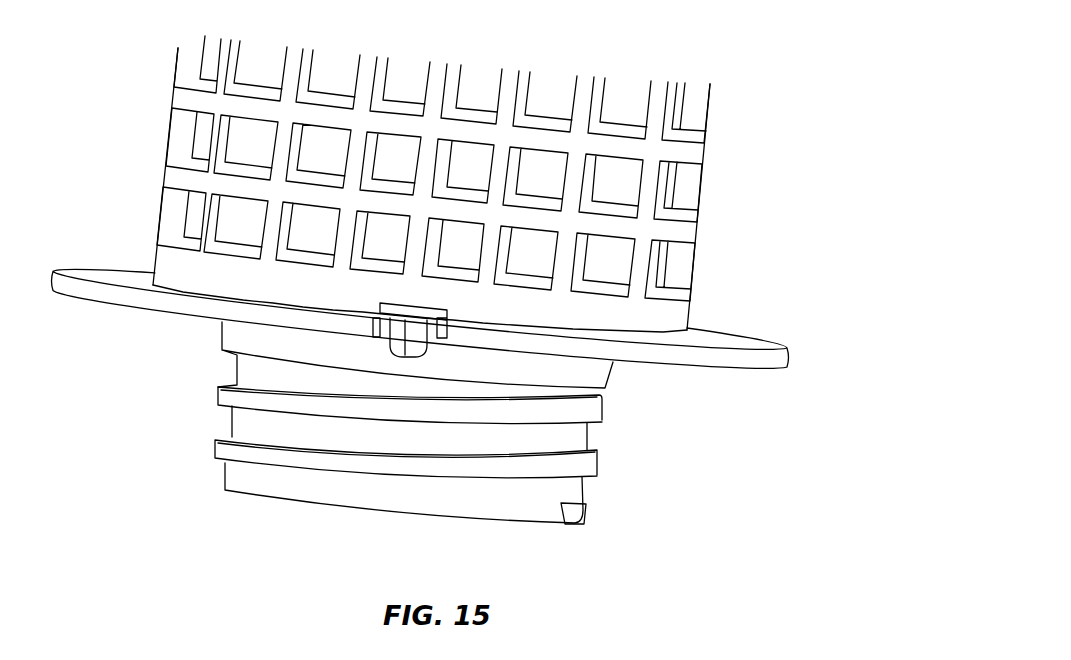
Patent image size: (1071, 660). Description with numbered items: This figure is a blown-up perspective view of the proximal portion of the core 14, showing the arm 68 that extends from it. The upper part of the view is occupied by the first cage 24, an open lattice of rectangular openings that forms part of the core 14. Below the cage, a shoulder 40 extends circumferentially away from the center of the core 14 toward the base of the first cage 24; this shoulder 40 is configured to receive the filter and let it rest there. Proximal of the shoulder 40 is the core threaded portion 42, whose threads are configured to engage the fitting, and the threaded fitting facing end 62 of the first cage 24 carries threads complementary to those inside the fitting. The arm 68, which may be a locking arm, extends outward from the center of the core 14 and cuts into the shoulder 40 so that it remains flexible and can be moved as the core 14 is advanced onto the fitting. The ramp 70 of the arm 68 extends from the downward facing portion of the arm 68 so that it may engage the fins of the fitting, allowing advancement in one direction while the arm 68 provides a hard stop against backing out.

The core 14 is at (502, 184).
The first cage 24 is at (683, 229).
The shoulder 40 is at (732, 362).
The core threaded portion 42 is at (565, 491).
The fitting facing end 62 is at (488, 523).
The arm 68 is at (393, 337).
The ramp 70 is at (403, 352).